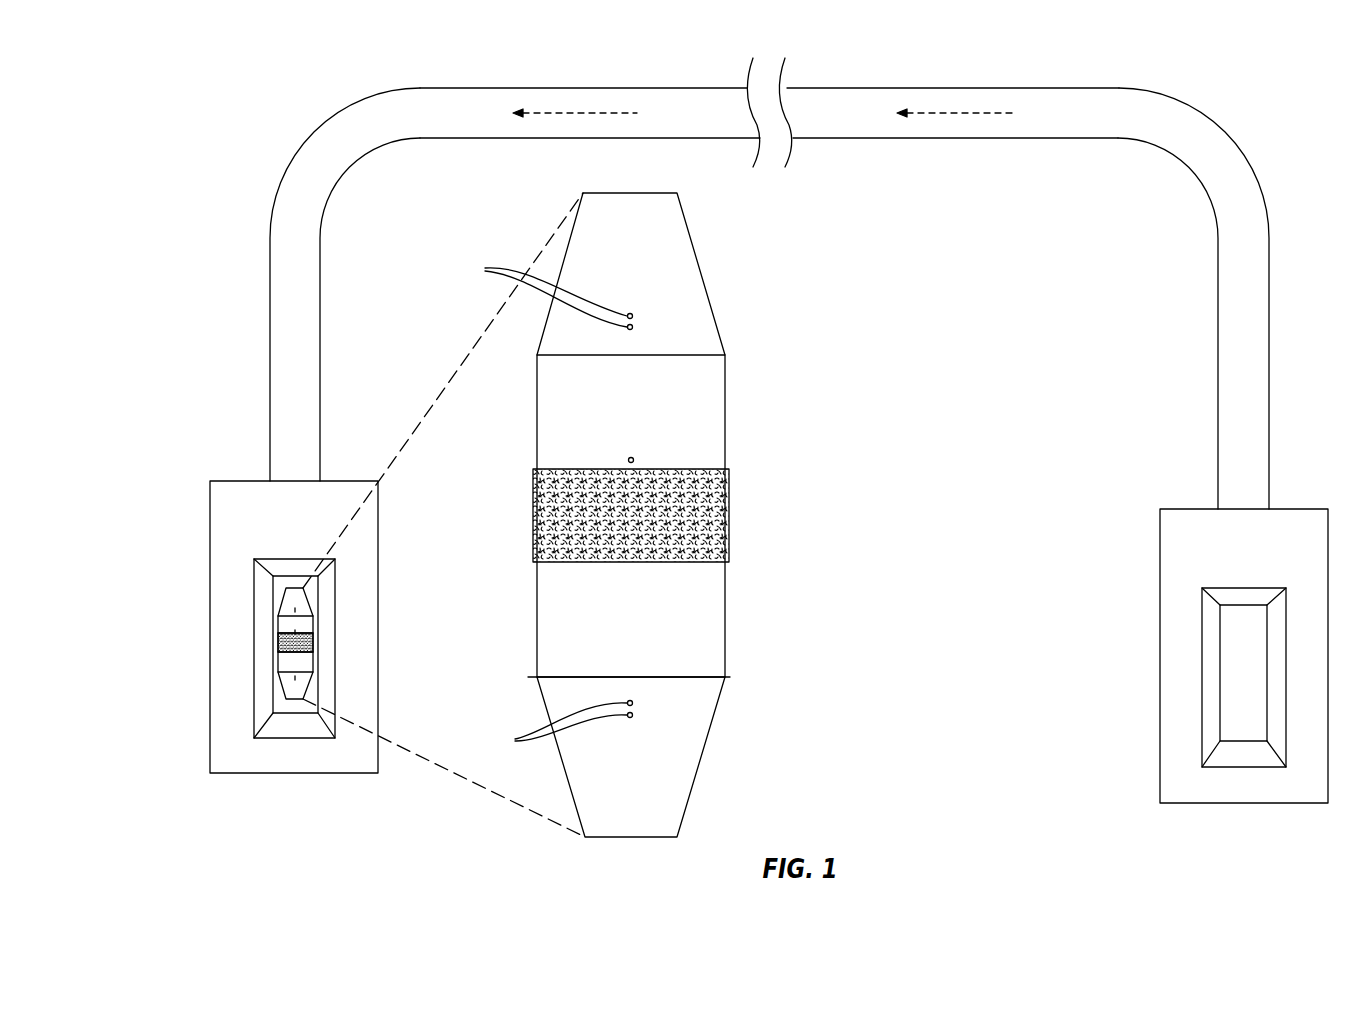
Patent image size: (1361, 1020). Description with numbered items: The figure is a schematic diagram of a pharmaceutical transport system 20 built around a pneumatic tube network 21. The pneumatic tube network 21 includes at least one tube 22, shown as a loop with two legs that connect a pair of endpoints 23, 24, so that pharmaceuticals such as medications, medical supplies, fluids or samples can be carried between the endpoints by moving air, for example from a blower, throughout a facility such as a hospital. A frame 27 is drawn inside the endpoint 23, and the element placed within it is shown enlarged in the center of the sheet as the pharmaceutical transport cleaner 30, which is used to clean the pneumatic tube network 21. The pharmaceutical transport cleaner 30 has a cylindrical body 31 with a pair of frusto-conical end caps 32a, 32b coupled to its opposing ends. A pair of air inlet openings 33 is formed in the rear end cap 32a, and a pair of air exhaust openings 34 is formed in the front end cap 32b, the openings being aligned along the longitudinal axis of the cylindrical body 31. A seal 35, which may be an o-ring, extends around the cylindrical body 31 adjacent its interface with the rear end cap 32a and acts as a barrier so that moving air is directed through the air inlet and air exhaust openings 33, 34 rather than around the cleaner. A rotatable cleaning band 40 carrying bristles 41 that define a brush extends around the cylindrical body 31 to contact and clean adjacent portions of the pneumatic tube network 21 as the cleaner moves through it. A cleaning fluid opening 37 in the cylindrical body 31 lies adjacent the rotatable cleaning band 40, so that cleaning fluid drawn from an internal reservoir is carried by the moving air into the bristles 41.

The pharmaceutical transport system 20 is at (243, 105).
The pneumatic tube network 21 is at (947, 73).
The tube 22 is at (295, 347).
The endpoint 23 is at (248, 776).
The endpoint 24 is at (1188, 805).
The receiving frame 27 is at (330, 658).
The pharmaceutical transport cleaner 30 is at (272, 597).
The cylindrical body 31 is at (278, 625).
The frusto-conical end cap 32a is at (622, 815).
The frusto-conical end cap 32b is at (673, 268).
The air inlet openings 33 is at (557, 730).
The air exhaust openings 34 is at (544, 292).
The seal 35 is at (730, 680).
The cleaning fluid opening 37 is at (632, 456).
The rotatable cleaning band 40 is at (742, 452).
The bristles 41 is at (708, 515).